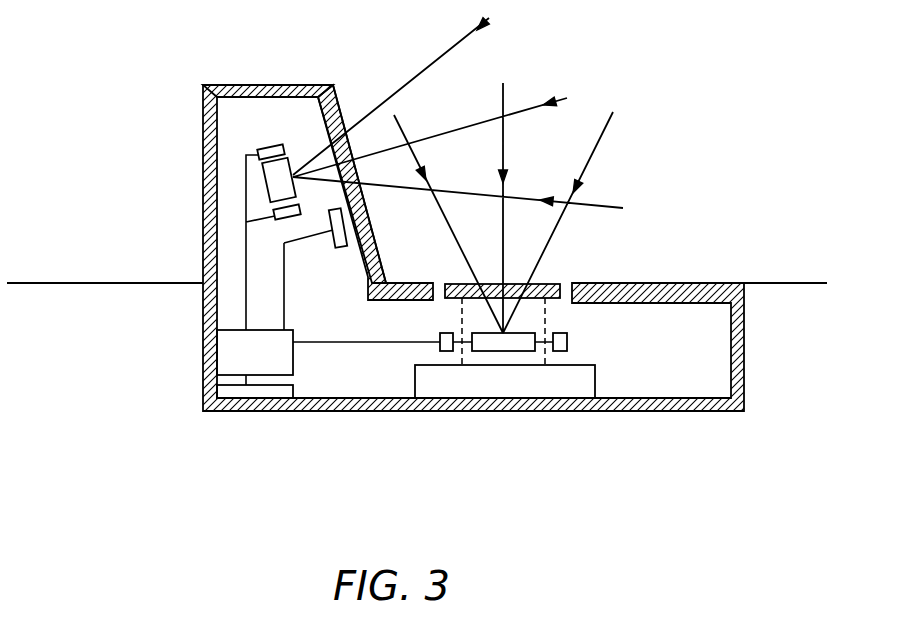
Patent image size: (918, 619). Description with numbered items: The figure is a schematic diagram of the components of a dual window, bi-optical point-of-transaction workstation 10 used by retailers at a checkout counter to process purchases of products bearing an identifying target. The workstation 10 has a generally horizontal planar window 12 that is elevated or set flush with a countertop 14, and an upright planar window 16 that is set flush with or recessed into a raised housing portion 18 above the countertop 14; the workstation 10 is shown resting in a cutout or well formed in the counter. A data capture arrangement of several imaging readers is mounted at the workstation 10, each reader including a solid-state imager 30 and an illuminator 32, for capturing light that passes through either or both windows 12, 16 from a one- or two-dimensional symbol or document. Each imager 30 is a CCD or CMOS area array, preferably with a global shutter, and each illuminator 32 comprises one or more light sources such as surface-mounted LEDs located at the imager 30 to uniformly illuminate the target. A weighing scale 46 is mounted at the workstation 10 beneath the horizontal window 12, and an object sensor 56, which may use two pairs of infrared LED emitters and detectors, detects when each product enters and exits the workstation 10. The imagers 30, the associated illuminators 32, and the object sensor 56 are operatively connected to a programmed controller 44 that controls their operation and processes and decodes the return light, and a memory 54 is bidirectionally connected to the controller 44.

The point-of-transaction workstation 10 is at (679, 231).
The horizontal planar window 12 is at (543, 282).
The countertop 14 is at (100, 283).
The upright planar window 16 is at (341, 120).
The raised housing portion 18 is at (268, 85).
The solid-state imager 30 is at (548, 458).
The illuminator 32 is at (660, 428).
The controller 44 is at (237, 360).
The weighing scale 46 is at (423, 380).
The memory 54 is at (230, 392).
The object sensor 56 is at (343, 250).